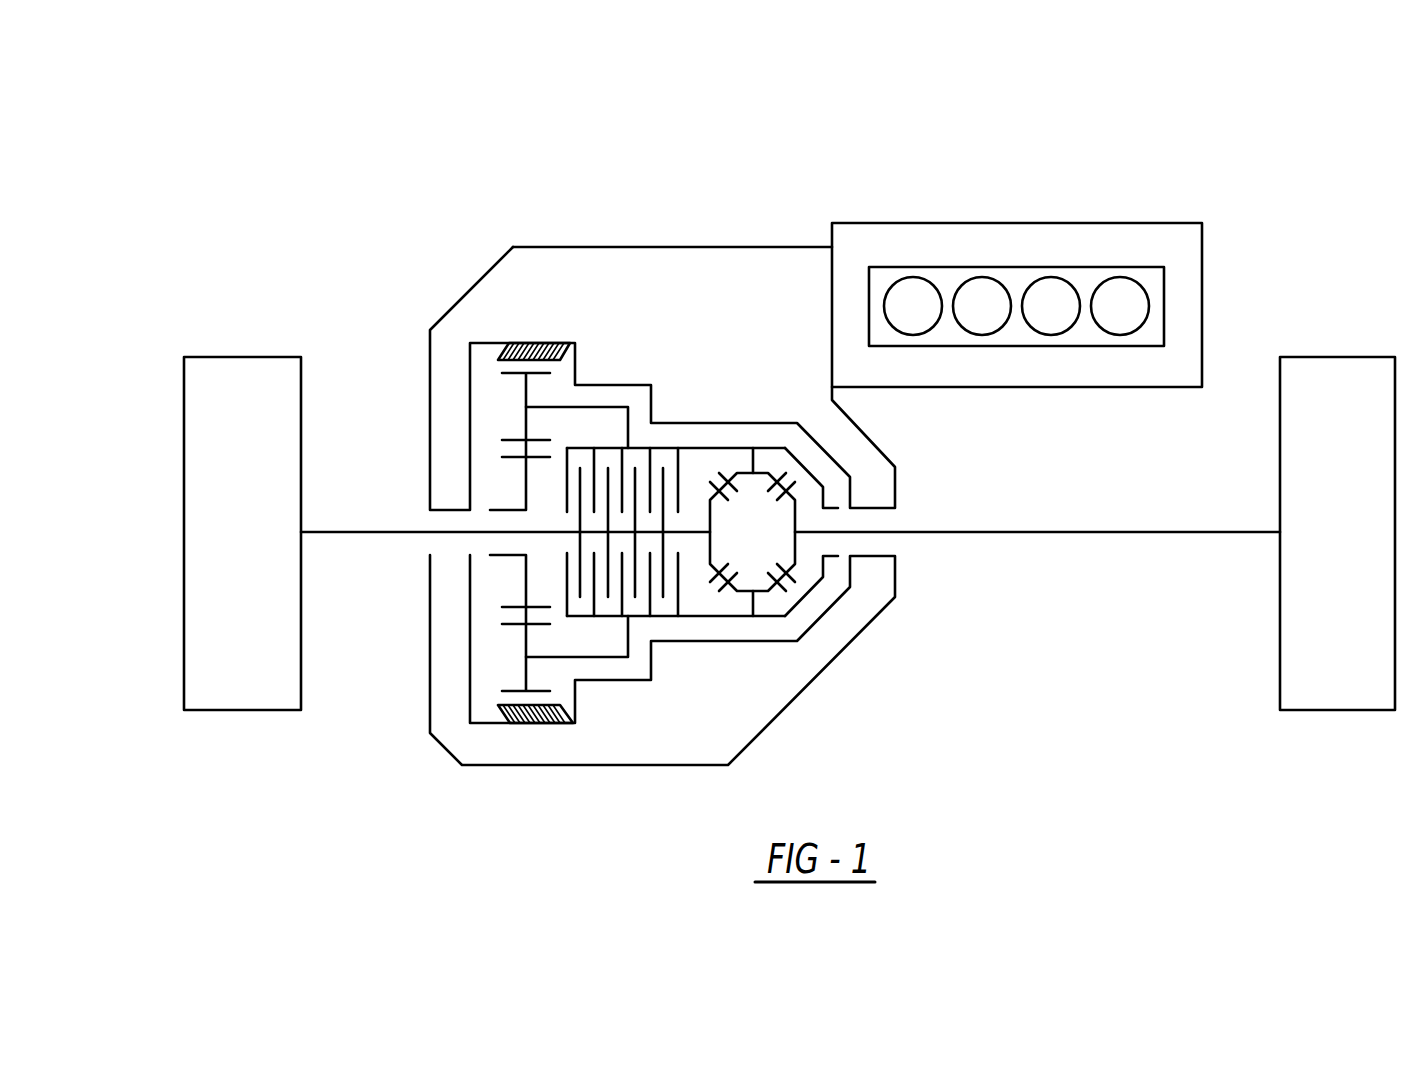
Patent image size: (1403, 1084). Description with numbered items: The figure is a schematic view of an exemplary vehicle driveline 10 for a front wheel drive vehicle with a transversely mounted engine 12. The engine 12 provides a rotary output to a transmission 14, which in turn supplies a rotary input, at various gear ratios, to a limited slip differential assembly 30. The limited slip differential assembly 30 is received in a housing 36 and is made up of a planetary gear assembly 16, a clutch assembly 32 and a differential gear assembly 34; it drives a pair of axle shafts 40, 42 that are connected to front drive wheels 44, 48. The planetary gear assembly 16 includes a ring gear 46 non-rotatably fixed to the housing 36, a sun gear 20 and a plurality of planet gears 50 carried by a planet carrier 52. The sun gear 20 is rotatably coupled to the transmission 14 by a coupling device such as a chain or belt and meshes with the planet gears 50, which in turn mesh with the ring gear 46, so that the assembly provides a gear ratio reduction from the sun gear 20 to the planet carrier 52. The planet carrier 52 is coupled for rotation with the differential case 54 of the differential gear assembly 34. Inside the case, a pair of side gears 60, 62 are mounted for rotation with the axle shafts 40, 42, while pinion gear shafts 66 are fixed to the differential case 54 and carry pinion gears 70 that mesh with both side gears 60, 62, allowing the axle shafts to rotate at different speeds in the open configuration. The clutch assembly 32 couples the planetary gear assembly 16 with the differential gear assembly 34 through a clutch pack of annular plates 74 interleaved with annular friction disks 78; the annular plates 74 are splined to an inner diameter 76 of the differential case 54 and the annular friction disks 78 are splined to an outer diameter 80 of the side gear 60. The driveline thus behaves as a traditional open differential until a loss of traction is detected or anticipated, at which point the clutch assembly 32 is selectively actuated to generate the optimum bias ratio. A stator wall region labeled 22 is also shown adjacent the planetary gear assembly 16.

The vehicle driveline 10 is at (1302, 227).
The engine 12 is at (1007, 233).
The transmission 14 is at (640, 265).
The planetary gear assembly 16 is at (488, 362).
The sun gear 20 is at (526, 482).
The stator 22 is at (445, 382).
The limited slip differential assembly 30 is at (713, 437).
The clutch assembly 32 is at (587, 633).
The differential gear assembly 34 is at (810, 460).
The housing 36 is at (688, 425).
The axle shaft 40 is at (353, 535).
The axle shaft 42 is at (1071, 532).
The front drive wheel 44 is at (242, 391).
The ring gear 46 is at (533, 343).
The front drive wheel 48 is at (1328, 687).
The planet gears 50 is at (522, 393).
The planet carrier 52 is at (607, 405).
The differential case 54 is at (820, 480).
The side gear 60 is at (712, 555).
The side gear 62 is at (808, 542).
The pinion gear shafts 66 is at (755, 462).
The pinion gears 70 is at (737, 470).
The annular plates 74 is at (593, 602).
The inner diameter 76 is at (608, 450).
The annular friction disks 78 is at (580, 477).
The outer diameter 80 is at (700, 532).